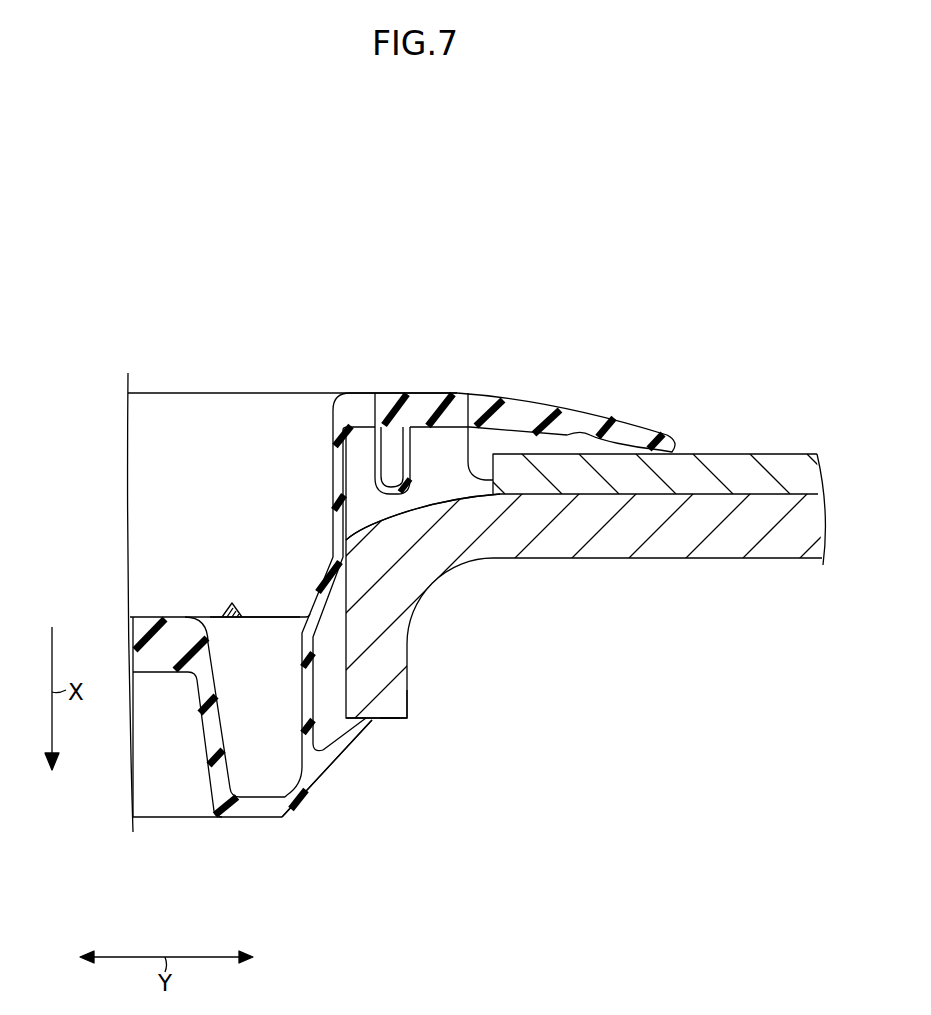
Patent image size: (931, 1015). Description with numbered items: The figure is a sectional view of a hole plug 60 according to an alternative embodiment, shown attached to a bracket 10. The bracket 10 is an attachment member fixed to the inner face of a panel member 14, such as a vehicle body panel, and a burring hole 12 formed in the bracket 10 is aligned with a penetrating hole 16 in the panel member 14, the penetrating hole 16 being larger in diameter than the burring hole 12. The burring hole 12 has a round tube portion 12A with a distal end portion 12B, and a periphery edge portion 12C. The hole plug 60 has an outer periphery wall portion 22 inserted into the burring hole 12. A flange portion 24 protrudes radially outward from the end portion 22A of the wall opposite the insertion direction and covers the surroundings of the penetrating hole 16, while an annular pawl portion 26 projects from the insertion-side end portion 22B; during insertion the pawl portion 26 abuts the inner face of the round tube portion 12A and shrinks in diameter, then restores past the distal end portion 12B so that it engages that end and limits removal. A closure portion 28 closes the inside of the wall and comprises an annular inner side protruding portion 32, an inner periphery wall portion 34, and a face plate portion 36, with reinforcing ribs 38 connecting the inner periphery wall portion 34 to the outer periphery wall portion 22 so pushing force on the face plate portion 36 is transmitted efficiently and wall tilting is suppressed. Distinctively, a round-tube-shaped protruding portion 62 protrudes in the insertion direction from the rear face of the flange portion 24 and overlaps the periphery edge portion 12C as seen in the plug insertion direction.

The bracket 10 is at (725, 558).
The burring hole 12 is at (340, 654).
The round tube portion 12A is at (409, 722).
The distal end portion 12B is at (369, 728).
The periphery edge portion 12C is at (350, 539).
The panel member 14 is at (740, 454).
The penetrating hole 16 is at (468, 393).
The outer periphery wall portion 22 is at (349, 530).
The end portion 22A is at (337, 391).
The end portion 22B is at (290, 820).
The flange portion 24 is at (599, 409).
The pawl portion 26 is at (372, 765).
The closure portion 28 is at (178, 603).
The inner side protruding portion 32 is at (266, 820).
The inner periphery wall portion 34 is at (200, 752).
The face plate portion 36 is at (145, 615).
The reinforcing ribs 38 is at (268, 612).
The hole plug 60 is at (513, 322).
The protruding portion 62 is at (375, 393).